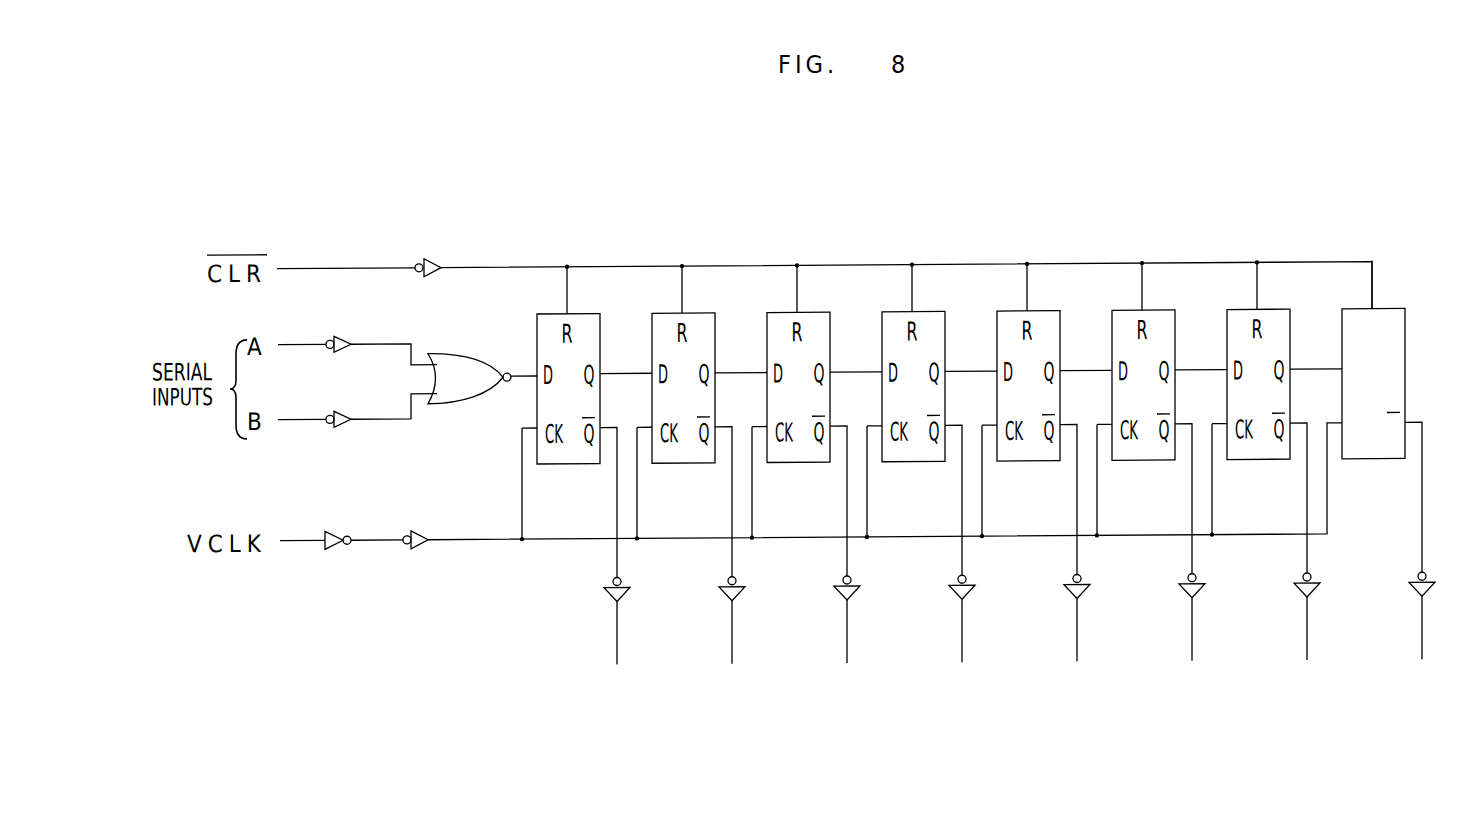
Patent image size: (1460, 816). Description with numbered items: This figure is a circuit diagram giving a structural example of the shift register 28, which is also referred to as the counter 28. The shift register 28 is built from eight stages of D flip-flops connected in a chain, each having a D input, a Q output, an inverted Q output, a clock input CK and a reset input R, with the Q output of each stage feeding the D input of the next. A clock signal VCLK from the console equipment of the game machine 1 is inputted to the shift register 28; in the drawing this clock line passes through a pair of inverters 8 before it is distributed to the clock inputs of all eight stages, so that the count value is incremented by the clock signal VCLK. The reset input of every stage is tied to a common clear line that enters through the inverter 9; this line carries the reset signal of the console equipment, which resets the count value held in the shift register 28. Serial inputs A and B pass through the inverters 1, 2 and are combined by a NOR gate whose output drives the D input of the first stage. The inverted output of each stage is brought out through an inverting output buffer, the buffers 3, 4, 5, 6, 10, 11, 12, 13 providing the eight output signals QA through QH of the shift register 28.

The game machine 1 is at (314, 330).
The inverter on serial input B 2 is at (314, 405).
The output buffer QA 3 is at (613, 564).
The output buffer QB 4 is at (728, 564).
The output buffer QC 5 is at (843, 563).
The output buffer QD 6 is at (958, 562).
The clock input inverters (VCLK) 8 is at (354, 527).
The clear input inverter (CLR) 9 is at (359, 256).
The output buffer QE 10 is at (1066, 561).
The output buffer QF 11 is at (1181, 561).
The output buffer QG 12 is at (1294, 560).
The output buffer QH 13 is at (1412, 559).
The shift register 28 is at (512, 680).